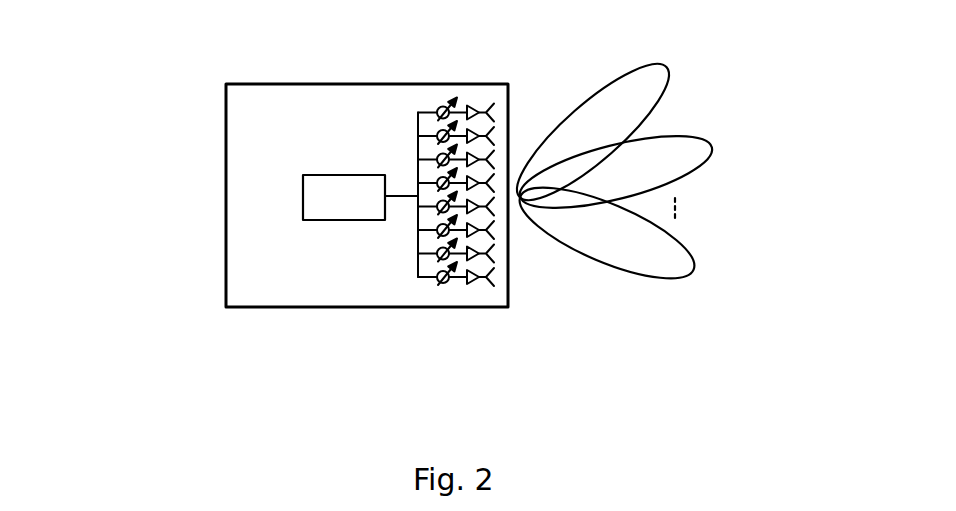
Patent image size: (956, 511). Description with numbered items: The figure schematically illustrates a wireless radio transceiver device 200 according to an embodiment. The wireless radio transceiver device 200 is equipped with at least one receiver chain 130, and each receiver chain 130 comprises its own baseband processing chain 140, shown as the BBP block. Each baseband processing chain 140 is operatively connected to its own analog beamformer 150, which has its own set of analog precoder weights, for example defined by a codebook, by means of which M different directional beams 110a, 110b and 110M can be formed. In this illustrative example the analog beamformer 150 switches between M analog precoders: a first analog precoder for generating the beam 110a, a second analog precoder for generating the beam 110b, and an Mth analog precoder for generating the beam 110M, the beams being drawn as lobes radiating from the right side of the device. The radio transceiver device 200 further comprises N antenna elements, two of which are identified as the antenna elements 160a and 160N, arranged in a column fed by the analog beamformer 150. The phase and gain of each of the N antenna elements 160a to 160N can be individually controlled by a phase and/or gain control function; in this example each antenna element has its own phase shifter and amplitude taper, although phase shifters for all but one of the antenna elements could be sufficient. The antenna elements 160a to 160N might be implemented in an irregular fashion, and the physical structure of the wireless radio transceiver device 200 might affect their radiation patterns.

The wireless radio transceiver device 200 is at (232, 274).
The receiver chain 130 is at (394, 199).
The baseband processing chain 140 is at (299, 181).
The analog beamformer 150 is at (418, 240).
The antenna element 160a is at (483, 0).
The antenna element 160N is at (460, 323).
The directional beam 110a is at (618, 88).
The directional beam 110b is at (675, 183).
The directional beam 110M is at (633, 268).